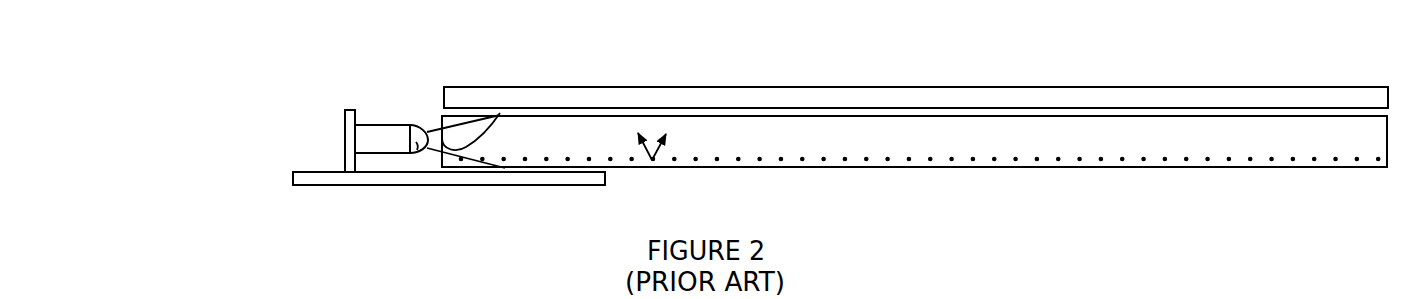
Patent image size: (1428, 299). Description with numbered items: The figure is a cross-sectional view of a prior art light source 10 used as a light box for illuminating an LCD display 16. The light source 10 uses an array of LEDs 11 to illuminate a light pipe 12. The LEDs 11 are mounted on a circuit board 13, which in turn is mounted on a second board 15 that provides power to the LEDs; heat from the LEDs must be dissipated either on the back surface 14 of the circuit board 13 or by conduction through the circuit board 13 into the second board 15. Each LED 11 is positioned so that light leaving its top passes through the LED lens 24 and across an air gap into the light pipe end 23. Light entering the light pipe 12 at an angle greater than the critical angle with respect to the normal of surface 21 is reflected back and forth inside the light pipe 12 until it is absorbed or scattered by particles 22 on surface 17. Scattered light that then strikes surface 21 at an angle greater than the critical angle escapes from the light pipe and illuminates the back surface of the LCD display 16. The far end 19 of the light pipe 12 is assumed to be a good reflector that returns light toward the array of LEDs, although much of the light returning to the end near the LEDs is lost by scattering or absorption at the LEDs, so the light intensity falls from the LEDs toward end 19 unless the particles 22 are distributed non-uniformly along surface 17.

The light source 10 is at (206, 87).
The LEDs 11 is at (370, 130).
The light pipe 12 is at (1152, 147).
The circuit board 13 is at (343, 126).
The back surface 14 is at (339, 147).
The second board 15 is at (428, 186).
The LCD display 16 is at (943, 92).
The surface 17 is at (979, 168).
The end 19 is at (1389, 141).
The surface 21 is at (743, 118).
The particles 22 is at (652, 160).
The light pipe end 23 is at (500, 113).
The LED lens 24 is at (421, 144).